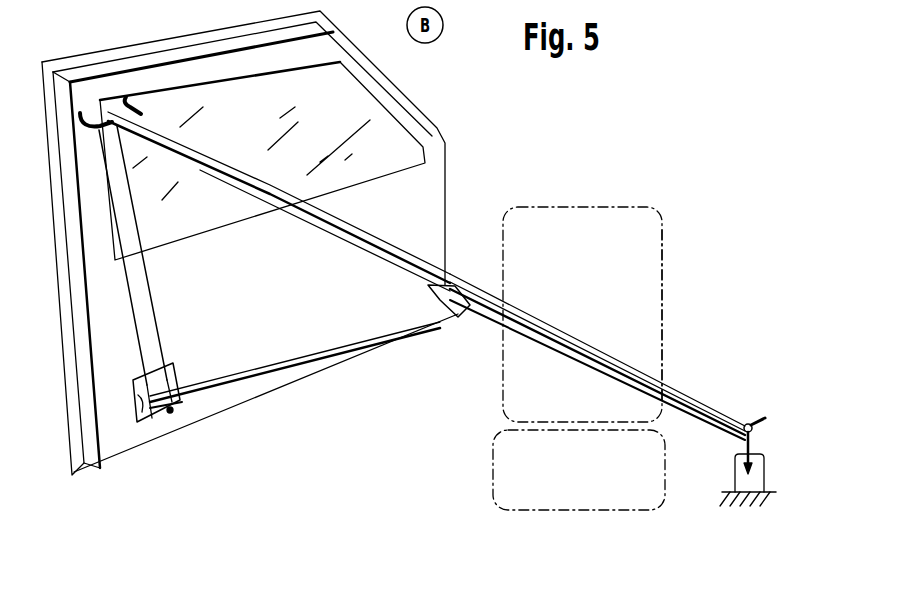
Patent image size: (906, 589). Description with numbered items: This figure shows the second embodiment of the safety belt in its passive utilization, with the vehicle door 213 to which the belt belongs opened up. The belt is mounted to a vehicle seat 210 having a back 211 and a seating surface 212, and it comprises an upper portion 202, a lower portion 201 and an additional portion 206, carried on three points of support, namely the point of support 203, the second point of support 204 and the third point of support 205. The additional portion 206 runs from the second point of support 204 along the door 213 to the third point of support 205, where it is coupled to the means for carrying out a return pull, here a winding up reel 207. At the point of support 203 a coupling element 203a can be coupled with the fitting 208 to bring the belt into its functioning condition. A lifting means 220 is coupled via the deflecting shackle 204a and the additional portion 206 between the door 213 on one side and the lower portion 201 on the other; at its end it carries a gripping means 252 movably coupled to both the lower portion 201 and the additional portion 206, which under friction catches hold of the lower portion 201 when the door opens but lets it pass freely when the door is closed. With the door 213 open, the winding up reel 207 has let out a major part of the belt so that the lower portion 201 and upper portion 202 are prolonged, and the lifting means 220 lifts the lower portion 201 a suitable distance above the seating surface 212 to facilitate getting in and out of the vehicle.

The lower portion 201 is at (488, 318).
The upper portion 202 is at (642, 370).
The point of support 203 is at (747, 424).
The coupling element 203a is at (742, 447).
The second point of support 204 is at (91, 111).
The deflecting shackle 204a is at (137, 96).
The third point of support 205 is at (170, 411).
The additional portion 206 is at (150, 317).
The winding up reel 207 is at (148, 425).
The fitting 208 is at (736, 472).
The vehicle seat 210 is at (647, 205).
The back 211 is at (655, 272).
The seating surface 212 is at (510, 464).
The door 213 is at (223, 403).
The lifting means 220 is at (343, 255).
The gripping means 252 is at (452, 309).